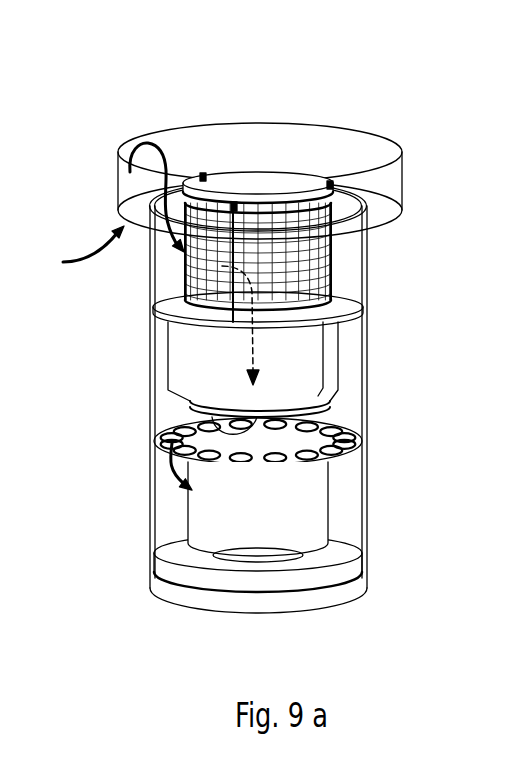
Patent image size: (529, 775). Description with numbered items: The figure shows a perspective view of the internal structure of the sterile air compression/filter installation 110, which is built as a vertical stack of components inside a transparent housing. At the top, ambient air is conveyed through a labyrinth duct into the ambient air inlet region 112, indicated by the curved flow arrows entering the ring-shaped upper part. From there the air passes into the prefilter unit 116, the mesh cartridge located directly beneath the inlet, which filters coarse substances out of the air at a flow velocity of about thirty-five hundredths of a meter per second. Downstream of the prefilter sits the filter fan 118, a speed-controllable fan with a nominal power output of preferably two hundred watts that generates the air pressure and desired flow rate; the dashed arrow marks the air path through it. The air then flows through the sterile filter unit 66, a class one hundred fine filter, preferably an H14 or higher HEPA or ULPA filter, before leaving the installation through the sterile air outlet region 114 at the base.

The sterile air compression/filter installation 110 is at (436, 188).
The ambient air inlet region 112 is at (122, 186).
The prefilter unit 116 is at (183, 280).
The filter fan 118 is at (182, 357).
The sterile filter unit 66 is at (200, 516).
The sterile air outlet region 114 is at (258, 593).